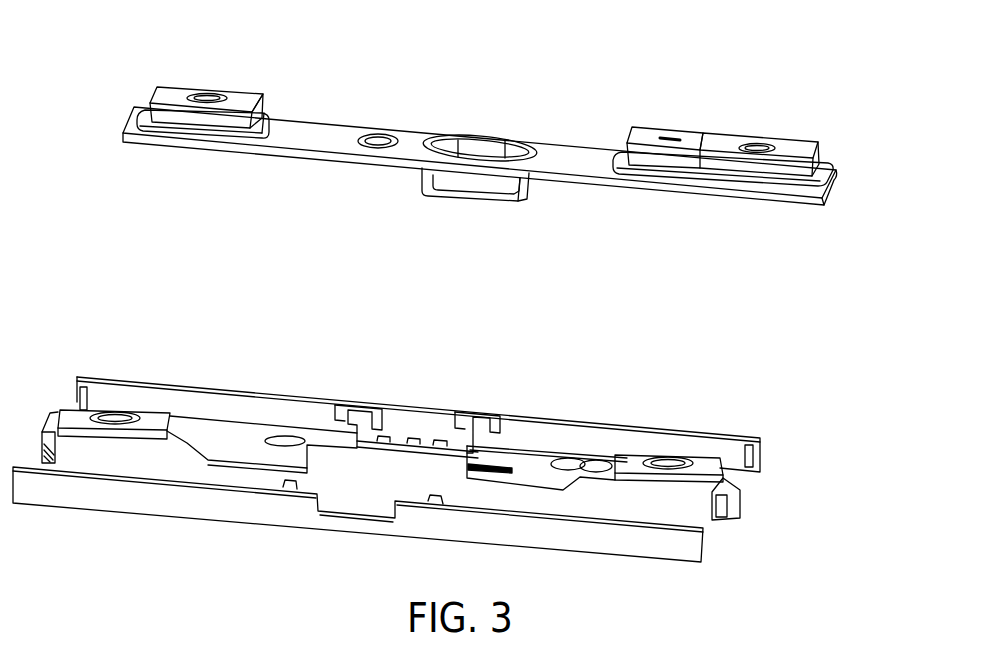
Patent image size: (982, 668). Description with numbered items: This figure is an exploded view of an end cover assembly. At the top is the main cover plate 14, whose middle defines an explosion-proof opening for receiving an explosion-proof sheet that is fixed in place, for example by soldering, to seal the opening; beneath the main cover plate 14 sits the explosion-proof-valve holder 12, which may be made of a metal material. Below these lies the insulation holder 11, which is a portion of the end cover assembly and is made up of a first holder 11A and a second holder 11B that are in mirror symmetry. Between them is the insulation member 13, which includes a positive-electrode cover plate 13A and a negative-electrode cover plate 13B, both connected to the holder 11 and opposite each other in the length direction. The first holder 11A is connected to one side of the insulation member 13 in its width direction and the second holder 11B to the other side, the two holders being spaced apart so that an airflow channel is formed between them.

The main cover plate 14 is at (323, 137).
The explosion-proof-valve holder 12 is at (527, 177).
The insulation holder 11 is at (464, 480).
The first holder 11A is at (703, 442).
The second holder 11B is at (415, 525).
The insulation member 13 is at (391, 415).
The positive-electrode cover plate 13A is at (233, 439).
The negative-electrode cover plate 13B is at (530, 465).